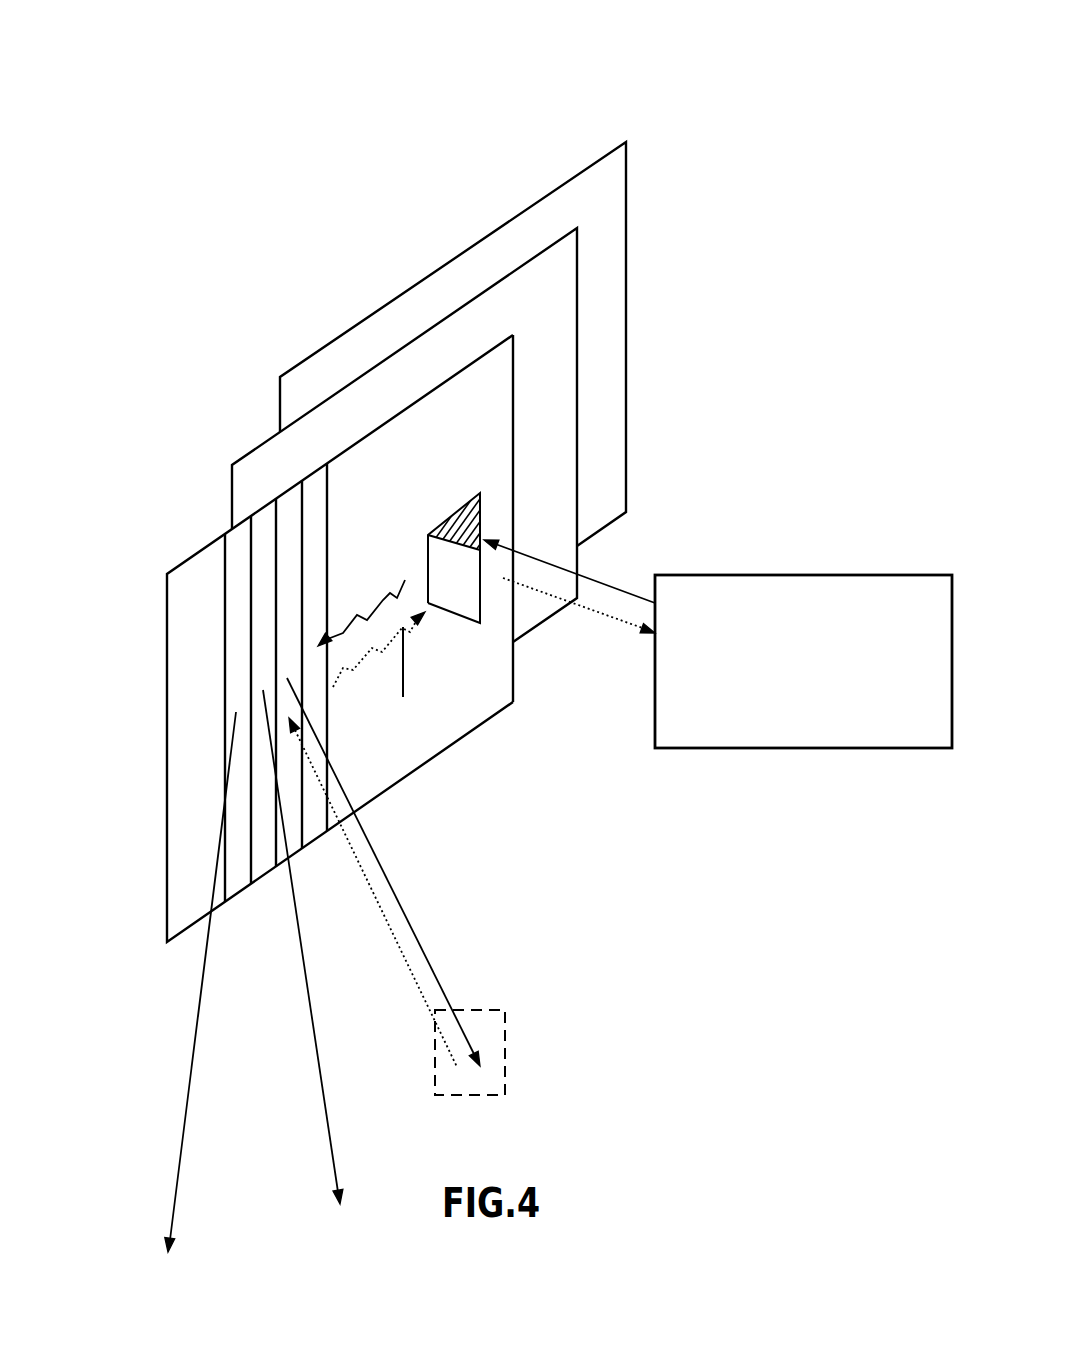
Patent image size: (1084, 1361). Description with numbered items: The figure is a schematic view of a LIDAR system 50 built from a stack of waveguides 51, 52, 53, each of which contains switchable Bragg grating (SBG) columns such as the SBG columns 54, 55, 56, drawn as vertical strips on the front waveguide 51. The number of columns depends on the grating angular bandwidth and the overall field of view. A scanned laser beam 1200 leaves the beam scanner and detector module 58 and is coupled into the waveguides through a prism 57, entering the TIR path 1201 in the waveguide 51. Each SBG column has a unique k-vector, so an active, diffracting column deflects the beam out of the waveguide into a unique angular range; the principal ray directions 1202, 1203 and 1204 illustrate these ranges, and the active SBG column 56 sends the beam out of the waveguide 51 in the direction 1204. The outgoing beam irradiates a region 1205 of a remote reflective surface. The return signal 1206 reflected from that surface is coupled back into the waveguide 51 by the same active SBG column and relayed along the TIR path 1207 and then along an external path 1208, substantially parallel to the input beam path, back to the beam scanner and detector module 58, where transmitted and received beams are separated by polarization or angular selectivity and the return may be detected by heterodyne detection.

The LIDAR system 50 is at (828, 65).
The waveguide 51 is at (210, 912).
The waveguide 52 is at (577, 302).
The waveguide 53 is at (626, 142).
The SBG column 54 is at (236, 558).
The SBG column 55 is at (259, 596).
The SBG column 56 is at (284, 629).
The prism 57 is at (513, 466).
The beam scanner and detector module 58 is at (810, 748).
The scanned laser beam 1200 is at (627, 592).
The TIR path 1201 is at (302, 682).
The principal ray direction 1202 is at (187, 1080).
The principal ray direction 1203 is at (327, 1163).
The unique direction 1204 is at (440, 975).
The region of a remote reflective surface 1205 is at (505, 1010).
The return signal 1206 is at (402, 943).
The TIR path 1207 is at (404, 697).
The external path 1208 is at (632, 627).